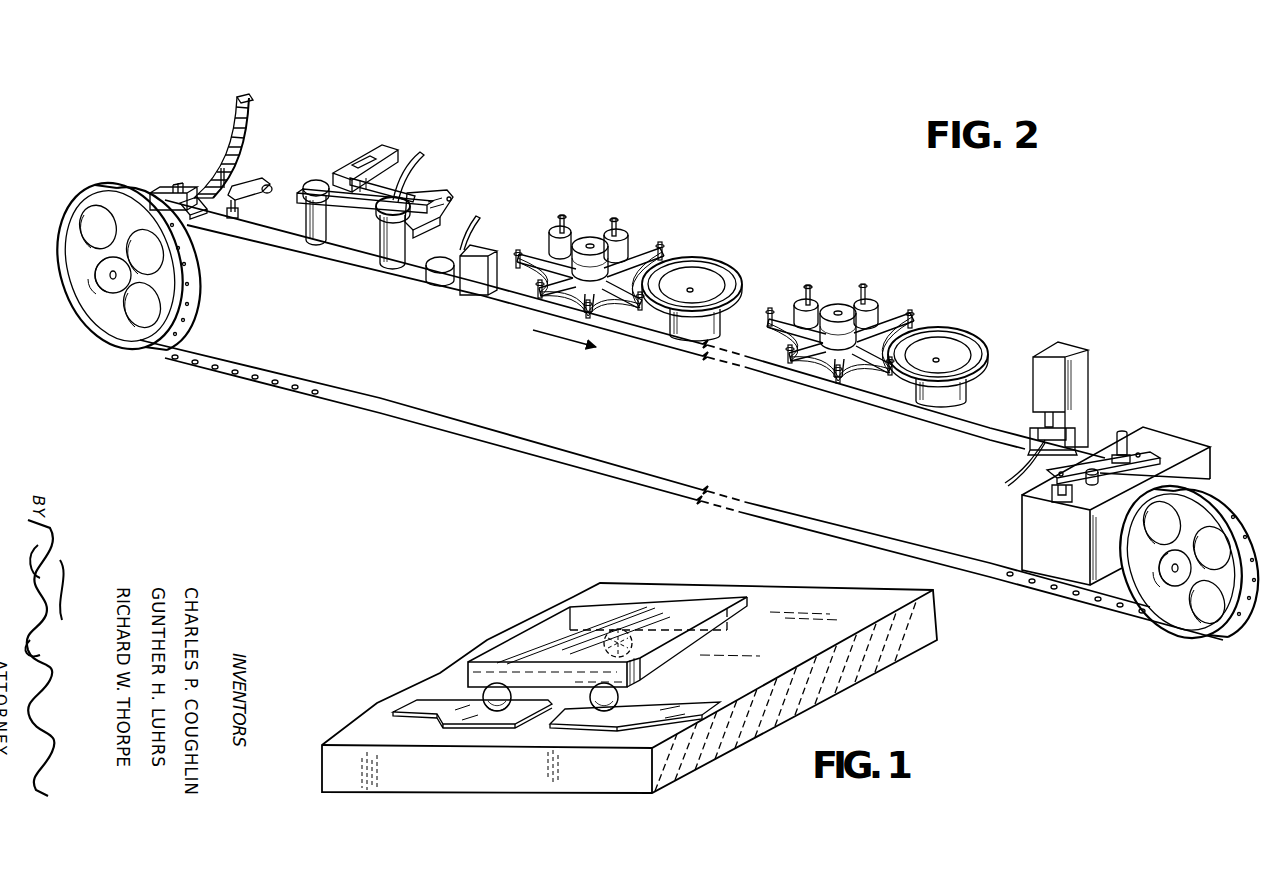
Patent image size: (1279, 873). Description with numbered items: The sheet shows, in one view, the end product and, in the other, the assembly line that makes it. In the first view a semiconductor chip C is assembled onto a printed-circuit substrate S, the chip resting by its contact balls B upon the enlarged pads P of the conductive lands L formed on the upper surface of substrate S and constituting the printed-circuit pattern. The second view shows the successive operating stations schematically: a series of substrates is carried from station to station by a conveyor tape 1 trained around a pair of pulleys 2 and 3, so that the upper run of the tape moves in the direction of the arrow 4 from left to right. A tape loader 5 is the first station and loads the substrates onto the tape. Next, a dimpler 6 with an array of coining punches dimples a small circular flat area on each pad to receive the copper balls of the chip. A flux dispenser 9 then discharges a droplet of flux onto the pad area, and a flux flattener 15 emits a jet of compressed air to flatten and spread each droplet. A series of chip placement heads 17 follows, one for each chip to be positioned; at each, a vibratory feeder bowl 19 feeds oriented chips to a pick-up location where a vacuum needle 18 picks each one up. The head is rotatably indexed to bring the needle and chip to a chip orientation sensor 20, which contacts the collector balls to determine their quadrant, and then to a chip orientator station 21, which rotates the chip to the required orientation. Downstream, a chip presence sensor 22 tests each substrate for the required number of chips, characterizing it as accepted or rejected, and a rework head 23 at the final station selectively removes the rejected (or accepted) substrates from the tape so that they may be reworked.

In FIG. 2, the conveyor tape 1 is at (332, 248).
In FIG. 2, the pulley 2 is at (190, 266).
In FIG. 2, the pulley 3 is at (1200, 625).
In FIG. 2, the arrow 4 is at (560, 340).
In FIG. 2, the tape loader 5 is at (297, 76).
In FIG. 2, the dimpler 6 is at (386, 137).
In FIG. 2, the flux dispenser 9 is at (477, 157).
In FIG. 2, the flux flattener 15 is at (478, 241).
In FIG. 2, the chip placement head 17 is at (840, 285).
In FIG. 2, the vacuum needle 18 is at (663, 250).
In FIG. 2, the vibratory feeder bowl 19 is at (730, 287).
In FIG. 2, the chip orientation sensor 20 is at (622, 235).
In FIG. 2, the chip orientator station 21 is at (552, 235).
In FIG. 2, the chip presence sensor 22 is at (1040, 338).
In FIG. 2, the rework head 23 is at (1173, 425).
In FIG. 1, the chip C is at (535, 628).
In FIG. 1, the contact ball B is at (624, 630).
In FIG. 1, the substrate S is at (383, 702).
In FIG. 1, the conductive land L is at (420, 707).
In FIG. 1, the pad P is at (575, 720).